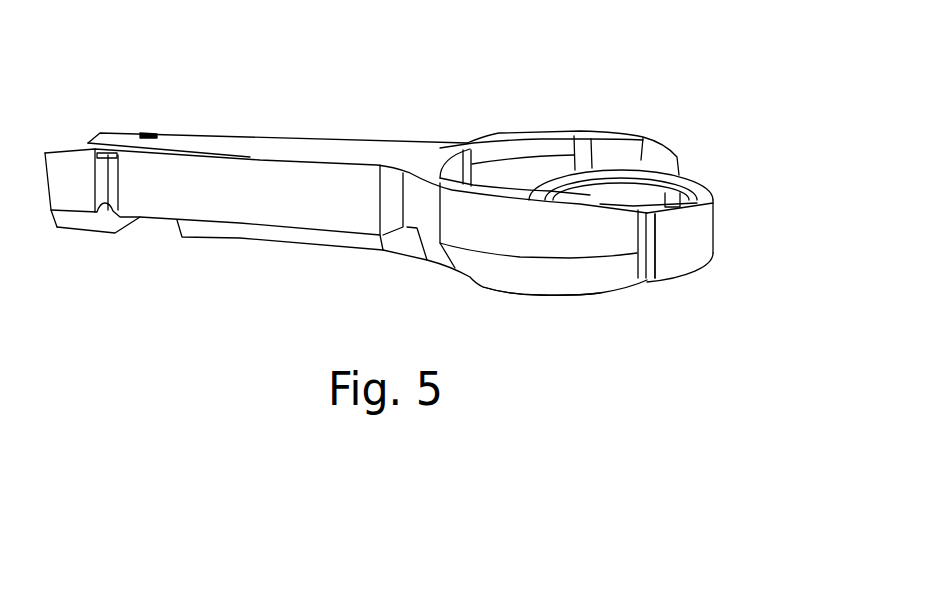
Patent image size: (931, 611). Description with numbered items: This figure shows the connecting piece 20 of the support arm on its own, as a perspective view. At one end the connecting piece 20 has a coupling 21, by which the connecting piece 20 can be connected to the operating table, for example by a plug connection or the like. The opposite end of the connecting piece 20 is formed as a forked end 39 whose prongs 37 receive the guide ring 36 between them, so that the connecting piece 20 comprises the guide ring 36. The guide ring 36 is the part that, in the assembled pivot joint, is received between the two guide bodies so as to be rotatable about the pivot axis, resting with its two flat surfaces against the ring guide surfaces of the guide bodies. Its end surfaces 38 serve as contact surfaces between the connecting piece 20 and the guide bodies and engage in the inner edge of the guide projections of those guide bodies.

The connecting piece 20 is at (320, 140).
The coupling 21 is at (99, 120).
The guide ring 36 is at (716, 210).
The prongs 37 is at (647, 137).
The end surfaces 38 is at (677, 211).
The forked end 39 is at (544, 307).